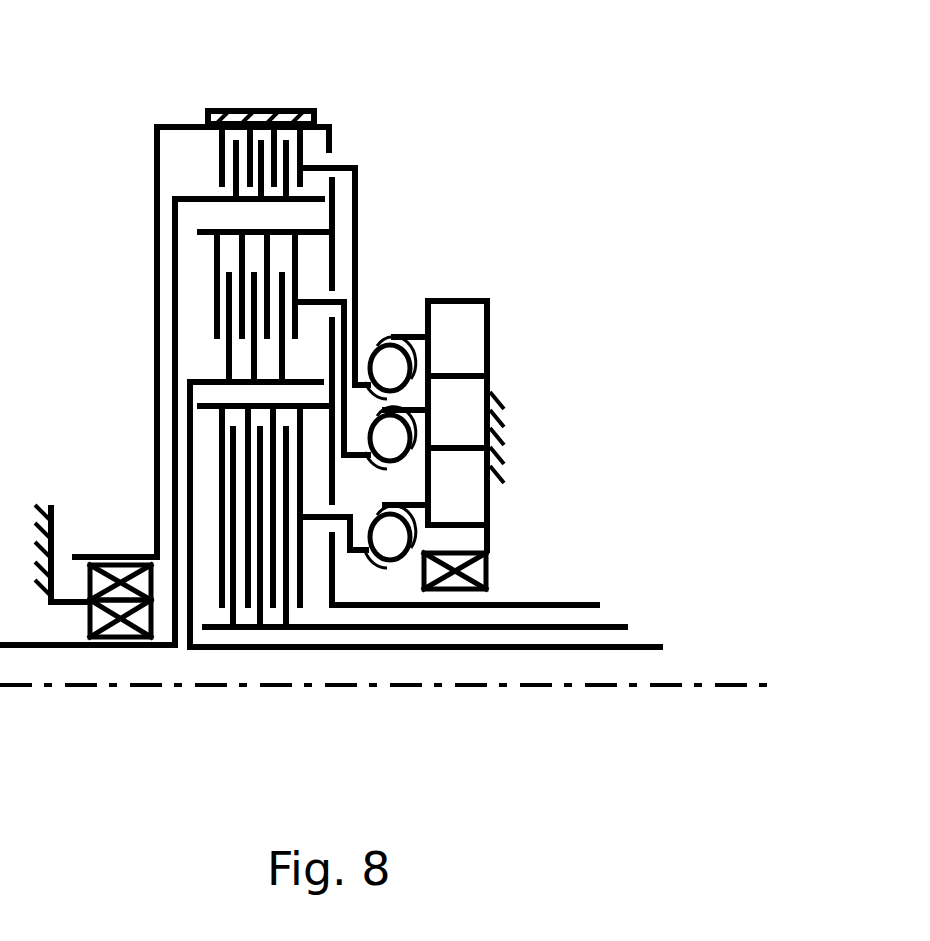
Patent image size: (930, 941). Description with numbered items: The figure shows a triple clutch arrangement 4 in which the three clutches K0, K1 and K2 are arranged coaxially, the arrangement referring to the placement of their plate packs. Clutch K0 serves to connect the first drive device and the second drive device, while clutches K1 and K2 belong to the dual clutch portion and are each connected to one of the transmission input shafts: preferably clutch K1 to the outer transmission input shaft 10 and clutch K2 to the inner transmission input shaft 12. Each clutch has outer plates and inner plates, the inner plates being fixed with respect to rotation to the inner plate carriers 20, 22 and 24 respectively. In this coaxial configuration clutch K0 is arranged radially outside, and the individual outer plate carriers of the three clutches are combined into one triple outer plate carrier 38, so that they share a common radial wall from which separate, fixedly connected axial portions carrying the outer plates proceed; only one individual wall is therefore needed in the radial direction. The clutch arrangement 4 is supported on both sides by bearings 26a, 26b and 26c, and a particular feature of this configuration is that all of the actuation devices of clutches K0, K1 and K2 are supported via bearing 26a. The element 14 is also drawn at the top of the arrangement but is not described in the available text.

The clutch arrangement 4 is at (502, 208).
The outer transmission input shaft 10 is at (576, 629).
The inner transmission input shaft 12 is at (493, 651).
The housing 14 is at (247, 110).
The inner plate carrier 20 is at (203, 203).
The inner plate carrier 22 is at (205, 380).
The inner plate carrier 24 is at (317, 628).
The bearing 26a is at (473, 568).
The bearing 26b is at (118, 555).
The bearing 26c is at (122, 639).
The triple outer plate carrier 38 is at (335, 210).
The clutch K0 is at (208, 150).
The clutch K1 is at (207, 455).
The clutch K2 is at (205, 307).